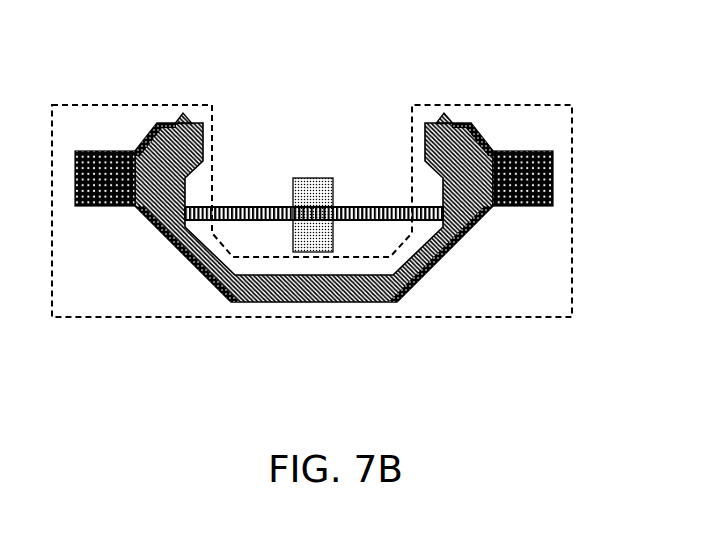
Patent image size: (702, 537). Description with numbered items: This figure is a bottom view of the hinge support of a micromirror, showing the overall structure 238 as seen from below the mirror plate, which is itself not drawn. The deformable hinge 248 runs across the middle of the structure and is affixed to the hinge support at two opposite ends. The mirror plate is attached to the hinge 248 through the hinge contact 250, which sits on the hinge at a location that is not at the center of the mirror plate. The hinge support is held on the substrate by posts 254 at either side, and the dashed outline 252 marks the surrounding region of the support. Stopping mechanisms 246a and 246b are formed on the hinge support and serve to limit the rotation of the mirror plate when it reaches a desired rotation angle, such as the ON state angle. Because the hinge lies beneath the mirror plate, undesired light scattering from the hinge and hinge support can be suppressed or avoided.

The optical device structure 238 is at (325, 70).
The stopping mechanism 246a is at (187, 110).
The stopping mechanism 246b is at (444, 117).
The hinge 248 is at (222, 205).
The hinge contact 250 is at (318, 177).
The cladding region 252 is at (560, 104).
The posts 254 is at (555, 168).